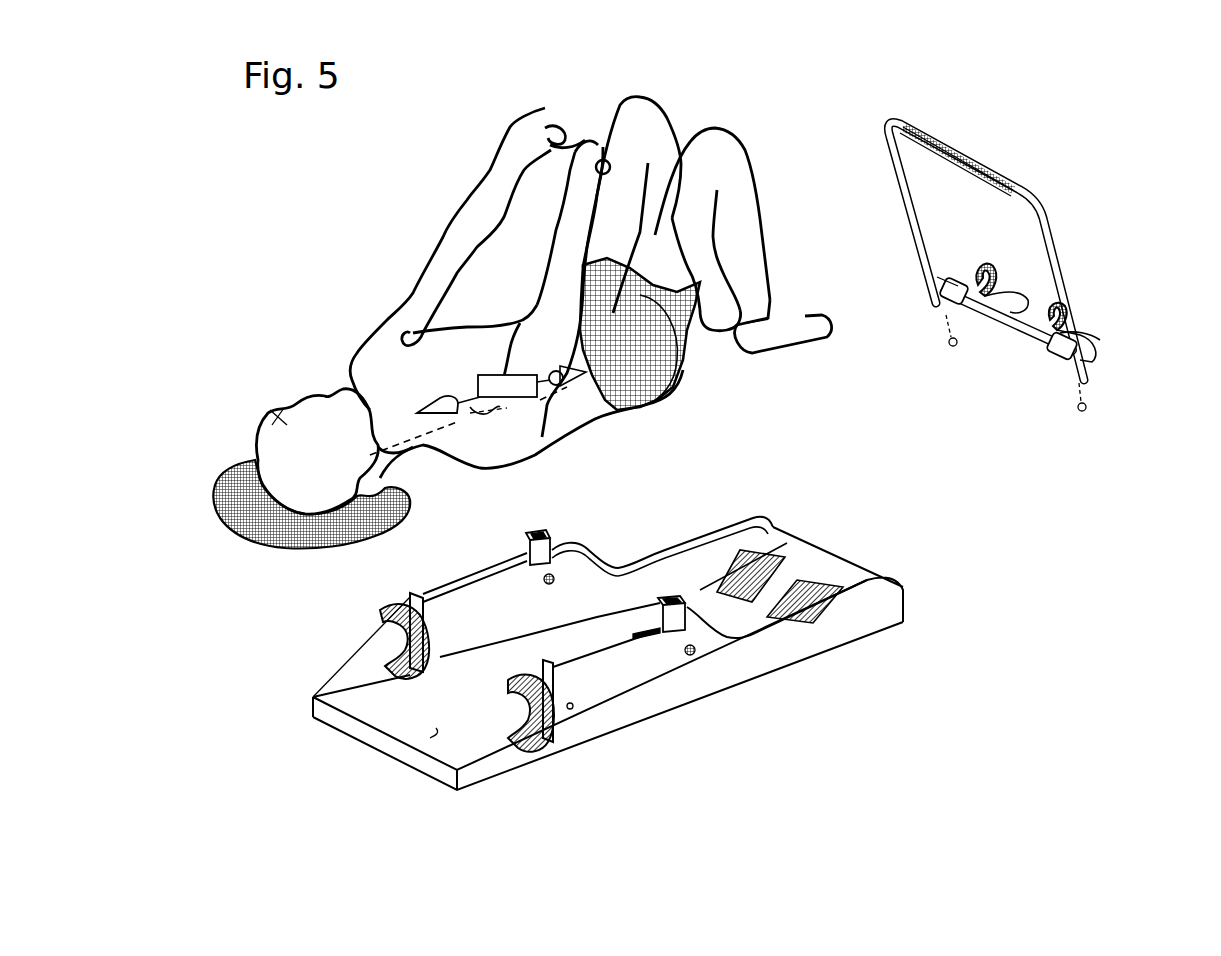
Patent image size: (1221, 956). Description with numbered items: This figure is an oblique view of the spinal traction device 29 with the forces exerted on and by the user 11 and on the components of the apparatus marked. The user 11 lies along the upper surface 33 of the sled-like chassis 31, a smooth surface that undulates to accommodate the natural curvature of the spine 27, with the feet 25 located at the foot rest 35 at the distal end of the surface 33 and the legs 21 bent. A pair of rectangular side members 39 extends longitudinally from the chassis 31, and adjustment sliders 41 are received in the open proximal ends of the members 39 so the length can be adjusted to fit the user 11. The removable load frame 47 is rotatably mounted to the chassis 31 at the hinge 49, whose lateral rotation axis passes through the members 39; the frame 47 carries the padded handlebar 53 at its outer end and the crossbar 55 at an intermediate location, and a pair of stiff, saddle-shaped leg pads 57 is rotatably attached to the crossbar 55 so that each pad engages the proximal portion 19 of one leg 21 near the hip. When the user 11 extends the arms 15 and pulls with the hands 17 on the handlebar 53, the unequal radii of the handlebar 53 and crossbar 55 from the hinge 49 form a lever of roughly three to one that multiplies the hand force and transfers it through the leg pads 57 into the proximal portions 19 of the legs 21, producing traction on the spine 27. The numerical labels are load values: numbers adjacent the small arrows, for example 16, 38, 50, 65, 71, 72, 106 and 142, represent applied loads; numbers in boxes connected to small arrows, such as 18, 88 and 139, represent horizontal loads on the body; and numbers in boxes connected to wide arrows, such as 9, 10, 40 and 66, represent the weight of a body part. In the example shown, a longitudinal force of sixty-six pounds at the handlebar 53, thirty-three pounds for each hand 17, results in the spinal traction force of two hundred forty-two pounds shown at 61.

The hand force direction 9 is at (467, 288).
The head support pad 10 is at (324, 466).
The user 11 is at (282, 425).
The arms 15 is at (423, 290).
The upward force direction 16 is at (533, 367).
The hands 17 is at (522, 132).
The foot strap 18 is at (730, 327).
The proximal portion of legs 19 is at (687, 343).
The legs 21 is at (740, 187).
The feet 25 is at (820, 313).
The spine 27 is at (430, 445).
The spinal traction device 29 is at (905, 604).
The chassis 31 is at (613, 710).
The upper surface 33 is at (562, 136).
The foot rest 35 is at (868, 580).
The hands 38 is at (555, 128).
The side members 39 is at (570, 727).
The knee force direction 40 is at (630, 248).
The adjustment sliders 41 is at (563, 747).
The load frame 47 is at (1060, 240).
The hinge 49 is at (703, 652).
The grip force direction 50 is at (940, 138).
The handlebar 53 is at (970, 147).
The crossbar 55 is at (1017, 323).
The leg pads 57 is at (1093, 340).
The spinal traction force 61 is at (437, 400).
The foot pad 65 is at (720, 340).
The downward force direction 66 is at (561, 484).
The pivot direction 71 is at (948, 345).
The lateral force direction 72 is at (388, 390).
The bumper 88 is at (390, 372).
The pivot pin 106 is at (947, 345).
The hip region 139 is at (567, 280).
The hand grip 142 is at (1043, 272).